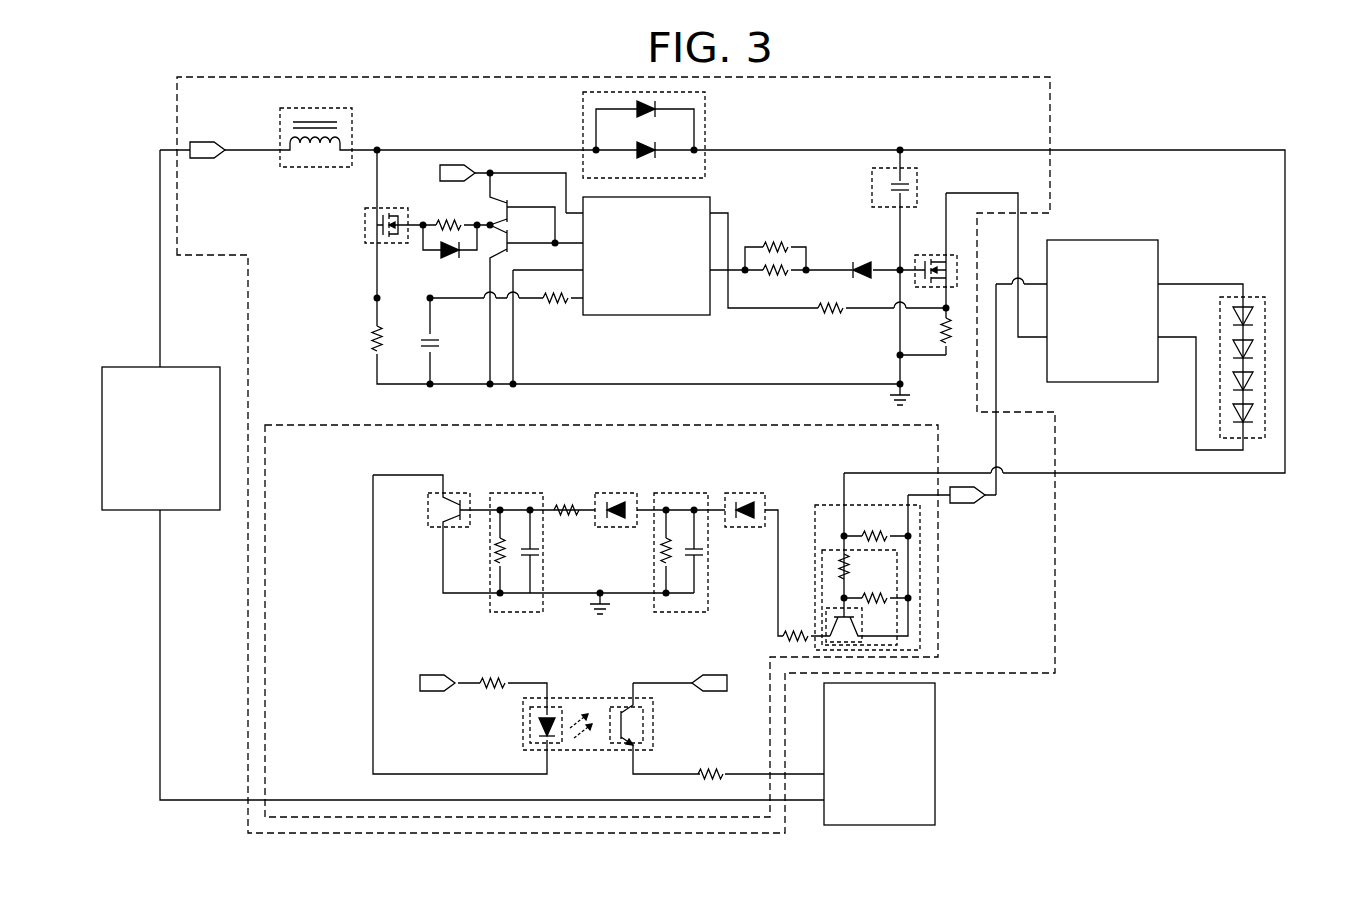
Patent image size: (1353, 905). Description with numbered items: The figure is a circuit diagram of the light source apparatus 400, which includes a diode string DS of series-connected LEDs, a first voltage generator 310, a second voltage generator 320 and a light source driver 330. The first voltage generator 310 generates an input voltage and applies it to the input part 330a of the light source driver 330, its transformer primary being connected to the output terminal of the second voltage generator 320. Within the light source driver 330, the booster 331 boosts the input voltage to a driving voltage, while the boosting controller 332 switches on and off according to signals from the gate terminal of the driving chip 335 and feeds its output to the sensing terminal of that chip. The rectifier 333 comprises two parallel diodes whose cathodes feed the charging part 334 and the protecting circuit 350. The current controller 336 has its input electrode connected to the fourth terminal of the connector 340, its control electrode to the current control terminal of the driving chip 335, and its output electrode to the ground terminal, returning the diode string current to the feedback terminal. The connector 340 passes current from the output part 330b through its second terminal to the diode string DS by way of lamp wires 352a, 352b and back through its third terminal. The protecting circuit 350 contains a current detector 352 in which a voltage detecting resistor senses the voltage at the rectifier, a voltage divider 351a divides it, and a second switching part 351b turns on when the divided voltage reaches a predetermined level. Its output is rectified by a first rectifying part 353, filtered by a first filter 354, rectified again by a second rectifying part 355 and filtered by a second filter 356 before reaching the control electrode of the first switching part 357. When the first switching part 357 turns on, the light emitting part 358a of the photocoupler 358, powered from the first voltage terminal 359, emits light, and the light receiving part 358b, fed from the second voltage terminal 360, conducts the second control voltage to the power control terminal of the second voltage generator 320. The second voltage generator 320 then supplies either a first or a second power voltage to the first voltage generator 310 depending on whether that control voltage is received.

The first voltage generator 310 is at (135, 367).
The second voltage generator 320 is at (935, 753).
The light source driver 330 is at (1050, 115).
The input part 330a is at (207, 158).
The output part 330b is at (965, 505).
The booster 331 is at (352, 118).
The boosting controller 332 is at (365, 225).
The rectifier 333 is at (705, 172).
The charging part 334 is at (872, 188).
The driving chip 335 is at (645, 315).
The current controller 336 is at (934, 255).
The connector 340 is at (1105, 240).
The protecting circuit 350 is at (248, 640).
The voltage divider 351a is at (822, 578).
The second switching part 351b is at (826, 625).
The current detector 352 is at (920, 615).
The lamp wire 352a is at (1233, 283).
The lamp wire 352b is at (1170, 337).
The first rectifying part 353 is at (745, 493).
The first filter 354 is at (682, 493).
The second rectifying part 355 is at (612, 493).
The second filter 356 is at (515, 493).
The first switching part 357 is at (452, 493).
The photocoupler 358 is at (593, 698).
The light emitting part 358a is at (530, 725).
The light receiving part 358b is at (643, 725).
The first voltage terminal 359 is at (436, 660).
The second voltage terminal 360 is at (713, 675).
The light source apparatus 400 is at (1184, 84).
The diode string DS is at (1265, 368).